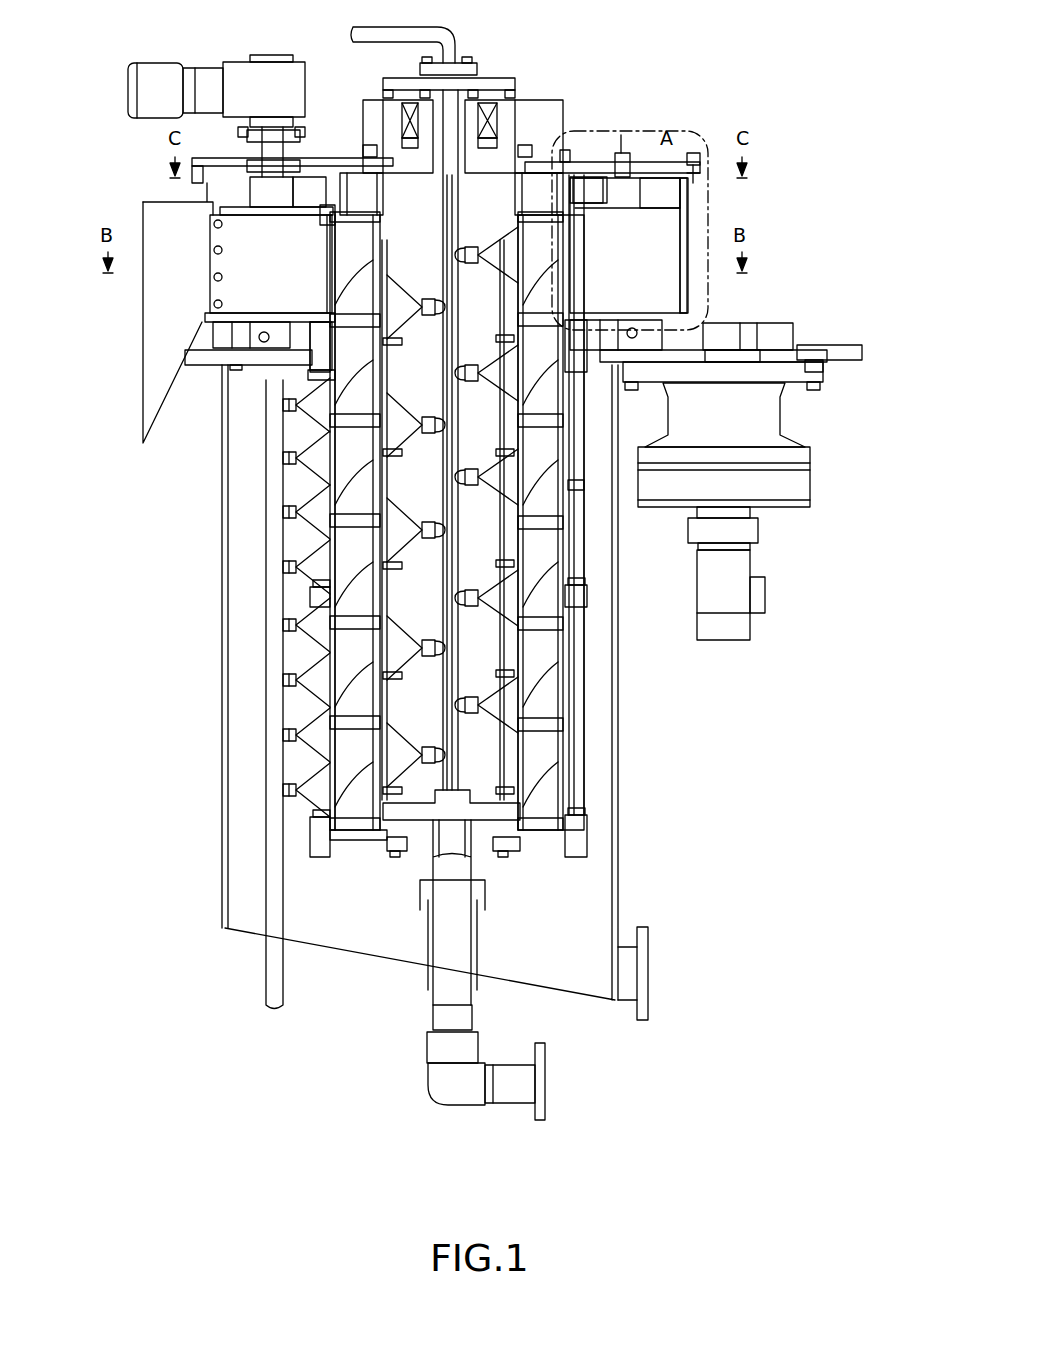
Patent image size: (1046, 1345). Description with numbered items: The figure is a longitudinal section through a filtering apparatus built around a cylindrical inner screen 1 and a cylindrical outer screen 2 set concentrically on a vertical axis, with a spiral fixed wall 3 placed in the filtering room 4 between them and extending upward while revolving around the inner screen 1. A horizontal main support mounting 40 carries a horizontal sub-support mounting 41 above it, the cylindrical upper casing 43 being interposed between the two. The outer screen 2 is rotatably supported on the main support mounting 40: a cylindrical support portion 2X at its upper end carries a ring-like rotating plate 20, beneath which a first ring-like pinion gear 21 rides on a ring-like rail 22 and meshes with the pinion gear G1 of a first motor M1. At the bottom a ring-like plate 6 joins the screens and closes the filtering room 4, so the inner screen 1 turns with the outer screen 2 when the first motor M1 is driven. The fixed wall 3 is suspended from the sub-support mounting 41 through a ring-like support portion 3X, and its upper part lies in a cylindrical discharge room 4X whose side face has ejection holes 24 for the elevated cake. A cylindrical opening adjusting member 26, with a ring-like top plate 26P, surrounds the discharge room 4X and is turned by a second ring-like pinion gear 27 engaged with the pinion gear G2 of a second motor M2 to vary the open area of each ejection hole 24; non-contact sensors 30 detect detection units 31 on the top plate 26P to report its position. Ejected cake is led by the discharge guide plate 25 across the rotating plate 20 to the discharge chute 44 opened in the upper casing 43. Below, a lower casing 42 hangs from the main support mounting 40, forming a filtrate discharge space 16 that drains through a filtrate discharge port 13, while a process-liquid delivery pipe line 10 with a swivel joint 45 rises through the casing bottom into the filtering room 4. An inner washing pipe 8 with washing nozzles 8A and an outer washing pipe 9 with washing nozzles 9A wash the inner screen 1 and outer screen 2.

The inner screen 1 is at (520, 745).
The outer screen 2 is at (333, 778).
The spiral fixed wall 3 is at (355, 707).
The filtering room 4 is at (355, 567).
The ring-like plate 6 is at (537, 847).
The inner washing pipe 8 is at (450, 553).
The washing nozzles 8A is at (470, 680).
The outer washing pipe 9 is at (275, 640).
The washing nozzles 9A is at (285, 508).
The process-liquid delivery pipe line 10 is at (452, 840).
The filtrate discharge port 13 is at (650, 972).
The filtrate discharge space 16 is at (600, 715).
The ring-like rotating plate 20 is at (257, 318).
The first ring-like pinion gear 21 is at (252, 340).
The ring-like rail 22 is at (277, 345).
The cylindrical support portion 2X is at (316, 358).
The ring-like support portion 3X is at (540, 190).
The cylindrical discharge room 4X is at (360, 218).
The ejection hole 24 is at (322, 265).
The discharge guide plate 25 is at (213, 232).
The opening adjusting member 26 is at (320, 217).
The ring-like top plate 26P is at (660, 198).
The second ring-like pinion gear 27 is at (312, 188).
The non-contact sensor 30 is at (628, 150).
The detection unit 31 is at (690, 155).
The main support mounting 40 is at (848, 348).
The sub-support mounting 41 is at (567, 164).
The lower casing 42 is at (223, 848).
The upper casing 43 is at (687, 283).
The discharge chute 44 is at (158, 210).
The swivel joint 45 is at (420, 1054).
The first motor M1 is at (772, 425).
The second motor M2 is at (153, 72).
The pinion gear G1 is at (793, 327).
The pinion gear G2 is at (255, 190).